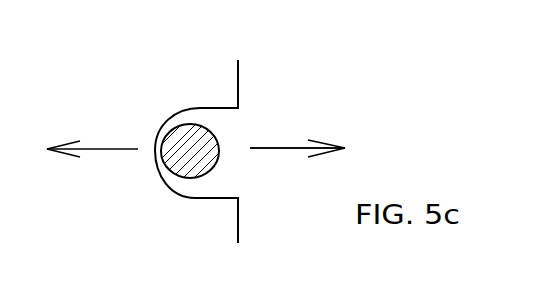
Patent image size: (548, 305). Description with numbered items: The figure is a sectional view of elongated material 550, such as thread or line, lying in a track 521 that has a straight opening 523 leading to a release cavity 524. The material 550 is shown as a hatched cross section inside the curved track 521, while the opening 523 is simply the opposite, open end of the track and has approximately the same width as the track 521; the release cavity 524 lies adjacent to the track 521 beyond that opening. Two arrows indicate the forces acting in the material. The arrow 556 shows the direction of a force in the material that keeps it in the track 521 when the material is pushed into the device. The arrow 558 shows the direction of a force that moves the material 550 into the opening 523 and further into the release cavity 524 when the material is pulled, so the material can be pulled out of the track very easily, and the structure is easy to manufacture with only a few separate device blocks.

The track 521 is at (180, 132).
The opening 523 is at (206, 70).
The release cavity 524 is at (297, 90).
The elongated material 550 is at (196, 194).
The arrow 556 is at (92, 105).
The arrow 558 is at (319, 109).